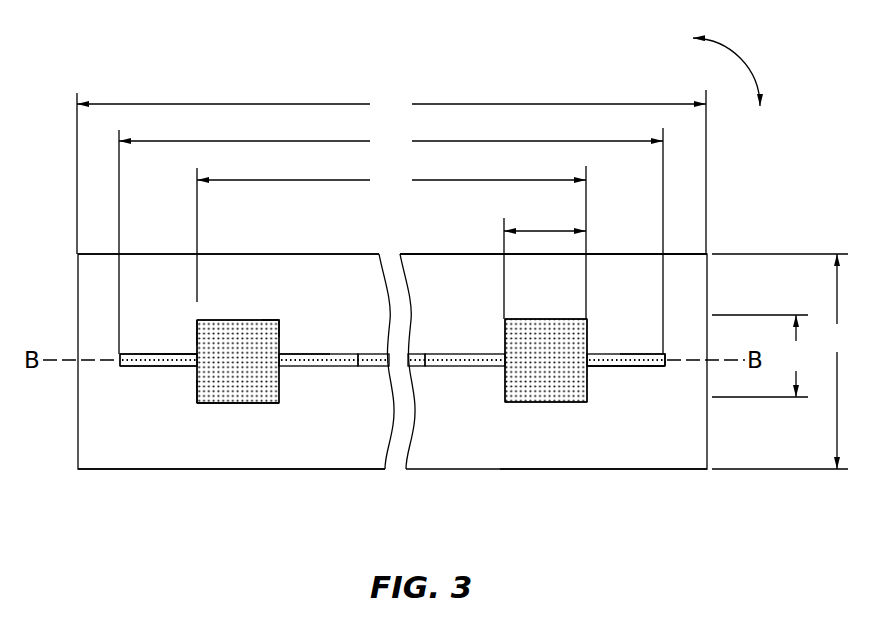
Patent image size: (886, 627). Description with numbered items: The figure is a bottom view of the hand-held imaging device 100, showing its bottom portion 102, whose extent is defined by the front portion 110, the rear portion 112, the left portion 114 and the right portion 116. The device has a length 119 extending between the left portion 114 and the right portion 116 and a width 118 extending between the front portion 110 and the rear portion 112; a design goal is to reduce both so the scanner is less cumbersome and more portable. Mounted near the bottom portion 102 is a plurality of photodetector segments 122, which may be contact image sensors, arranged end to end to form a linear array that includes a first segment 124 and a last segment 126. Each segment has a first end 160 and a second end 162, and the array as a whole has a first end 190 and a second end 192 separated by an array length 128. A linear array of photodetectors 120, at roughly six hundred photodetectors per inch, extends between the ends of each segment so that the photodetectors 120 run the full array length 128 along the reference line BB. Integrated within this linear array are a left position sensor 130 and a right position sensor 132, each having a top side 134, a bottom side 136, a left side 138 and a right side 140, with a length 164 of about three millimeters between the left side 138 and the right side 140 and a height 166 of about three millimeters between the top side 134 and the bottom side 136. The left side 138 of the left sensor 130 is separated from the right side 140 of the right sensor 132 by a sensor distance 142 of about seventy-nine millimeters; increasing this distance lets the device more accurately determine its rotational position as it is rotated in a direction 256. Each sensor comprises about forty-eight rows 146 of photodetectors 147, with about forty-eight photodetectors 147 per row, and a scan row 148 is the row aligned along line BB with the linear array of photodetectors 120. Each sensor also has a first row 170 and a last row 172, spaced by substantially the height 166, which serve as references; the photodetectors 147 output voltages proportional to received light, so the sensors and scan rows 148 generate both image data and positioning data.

The imaging device 100 is at (733, 221).
The bottom portion 102 is at (342, 433).
The front portion 110 is at (437, 253).
The rear portion 112 is at (608, 469).
The left portion 114 is at (78, 455).
The right portion 116 is at (707, 440).
The width 118 is at (783, 361).
The length 119 is at (391, 172).
The linear array of photodetectors 120 is at (478, 358).
The photodetector segments 122 is at (668, 366).
The first segment 124 is at (146, 350).
The last segment 126 is at (632, 368).
The array length 128 is at (391, 241).
The left position sensor 130 is at (268, 407).
The right position sensor 132 is at (515, 405).
The top side 134 is at (239, 318).
The bottom side 136 is at (240, 404).
The left side 138 is at (197, 383).
The right side 140 is at (280, 387).
The sensor distance 142 is at (391, 242).
The rows of photodetectors 146 is at (273, 318).
The photodetectors 147 is at (213, 403).
The scan row 148 is at (287, 352).
The first end 160 is at (128, 370).
The second end 162 is at (192, 355).
The length 164 is at (545, 227).
The height 166 is at (762, 356).
The first row 170 is at (194, 324).
The last row 172 is at (194, 400).
The first end 190 is at (117, 359).
The second end 192 is at (666, 354).
The direction 256 is at (747, 52).